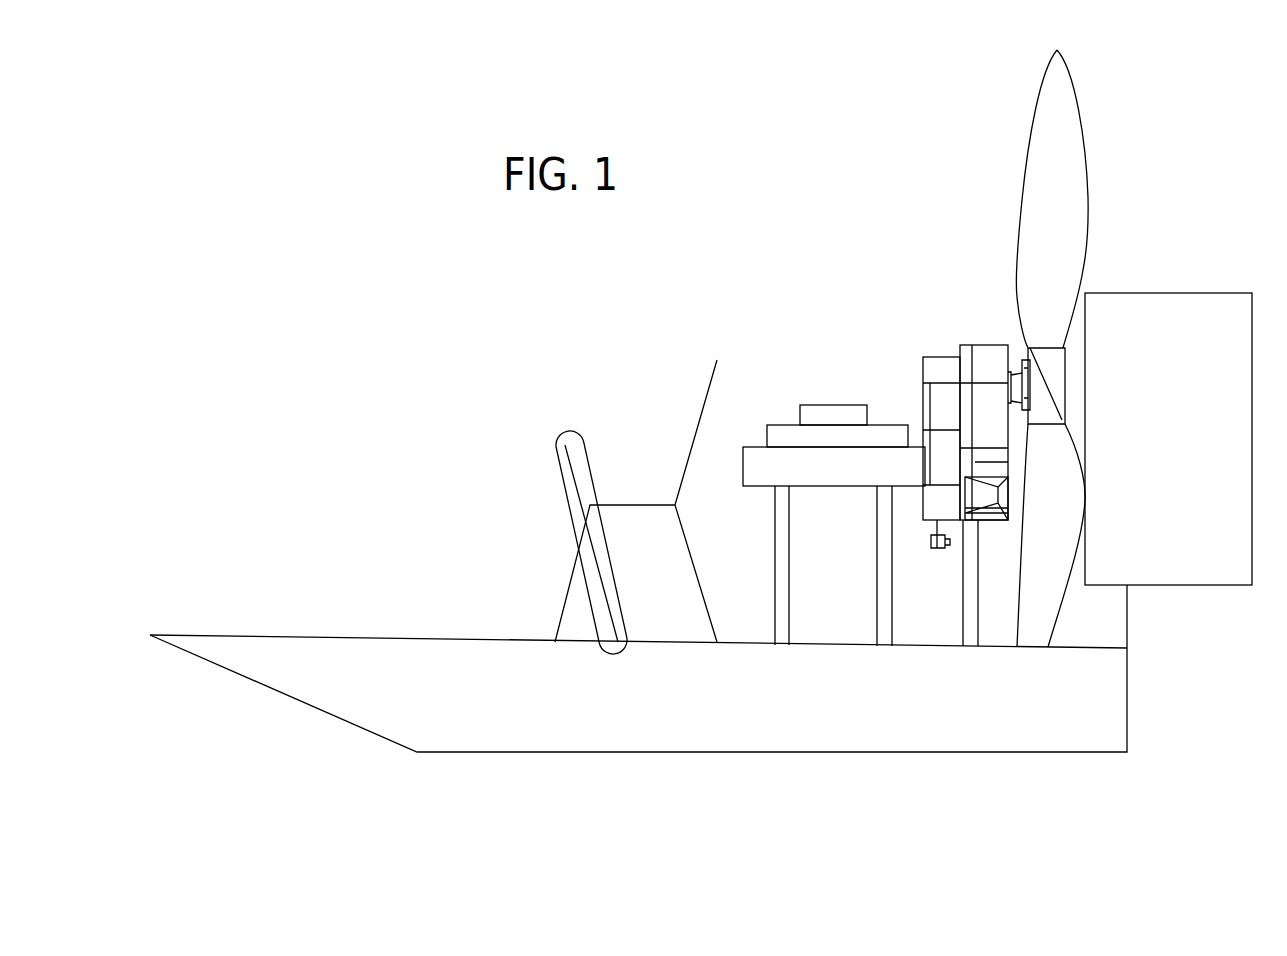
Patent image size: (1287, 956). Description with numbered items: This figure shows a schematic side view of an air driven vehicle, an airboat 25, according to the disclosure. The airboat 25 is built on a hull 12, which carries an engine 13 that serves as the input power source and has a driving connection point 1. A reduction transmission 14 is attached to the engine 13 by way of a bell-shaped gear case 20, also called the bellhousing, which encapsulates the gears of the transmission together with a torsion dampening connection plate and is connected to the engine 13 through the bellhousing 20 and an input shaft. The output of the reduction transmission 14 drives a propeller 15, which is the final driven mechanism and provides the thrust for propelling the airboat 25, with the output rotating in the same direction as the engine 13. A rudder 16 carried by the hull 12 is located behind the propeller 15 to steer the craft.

The driving connection point 1 is at (923, 539).
The hull 12 is at (285, 693).
The engine 13 is at (827, 403).
The reduction transmission 14 is at (957, 340).
The propeller 15 is at (1088, 250).
The rudder 16 is at (1205, 589).
The bell-shaped gear case 20 is at (990, 345).
The airboat 25 is at (525, 640).